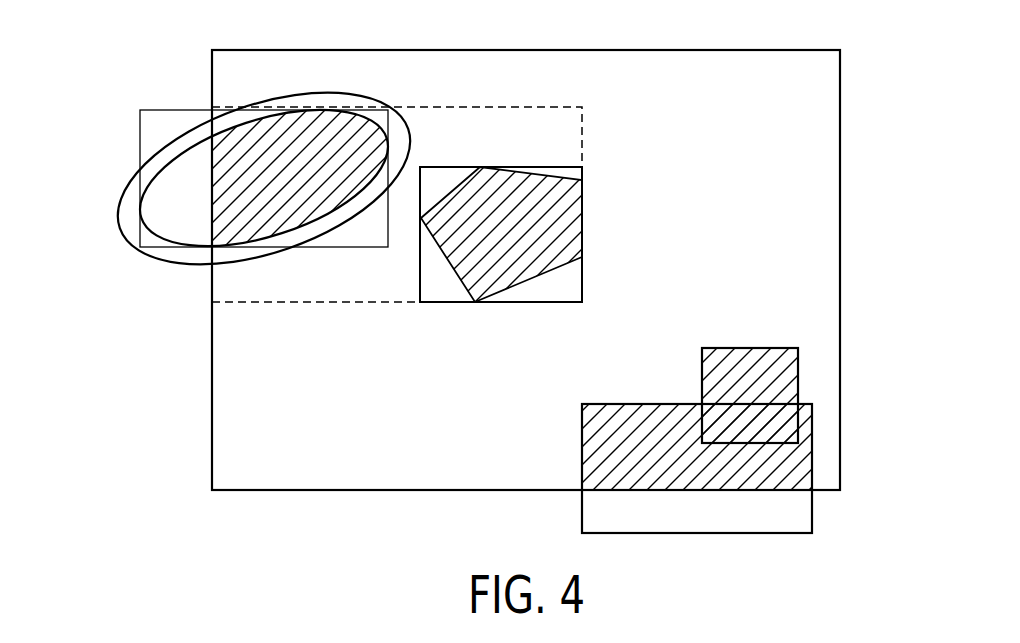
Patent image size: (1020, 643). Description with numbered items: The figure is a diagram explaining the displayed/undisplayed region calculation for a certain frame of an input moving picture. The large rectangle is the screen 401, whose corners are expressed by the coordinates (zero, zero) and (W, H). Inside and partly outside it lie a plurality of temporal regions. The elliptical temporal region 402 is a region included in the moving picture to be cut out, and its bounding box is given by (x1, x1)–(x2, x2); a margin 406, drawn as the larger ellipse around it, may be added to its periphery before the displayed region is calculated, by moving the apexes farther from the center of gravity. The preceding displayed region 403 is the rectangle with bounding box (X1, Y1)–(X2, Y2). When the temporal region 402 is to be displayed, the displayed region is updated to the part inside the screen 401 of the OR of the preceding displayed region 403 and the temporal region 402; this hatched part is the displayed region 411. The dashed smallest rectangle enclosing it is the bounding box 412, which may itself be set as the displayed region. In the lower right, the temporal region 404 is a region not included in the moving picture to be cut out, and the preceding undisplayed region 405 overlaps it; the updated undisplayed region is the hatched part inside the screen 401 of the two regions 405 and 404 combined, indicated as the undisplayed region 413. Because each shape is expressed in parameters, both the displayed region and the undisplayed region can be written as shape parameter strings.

The screen 401 is at (843, 100).
The temporal region 402 is at (150, 246).
The preceding displayed region 403 is at (565, 177).
The temporal region 404 is at (580, 421).
The preceding undisplayed region 405 is at (702, 362).
The margin 406 is at (122, 240).
The displayed region 411 is at (320, 124).
The bounding box 412 is at (583, 120).
The undisplayed region 413 is at (600, 467).